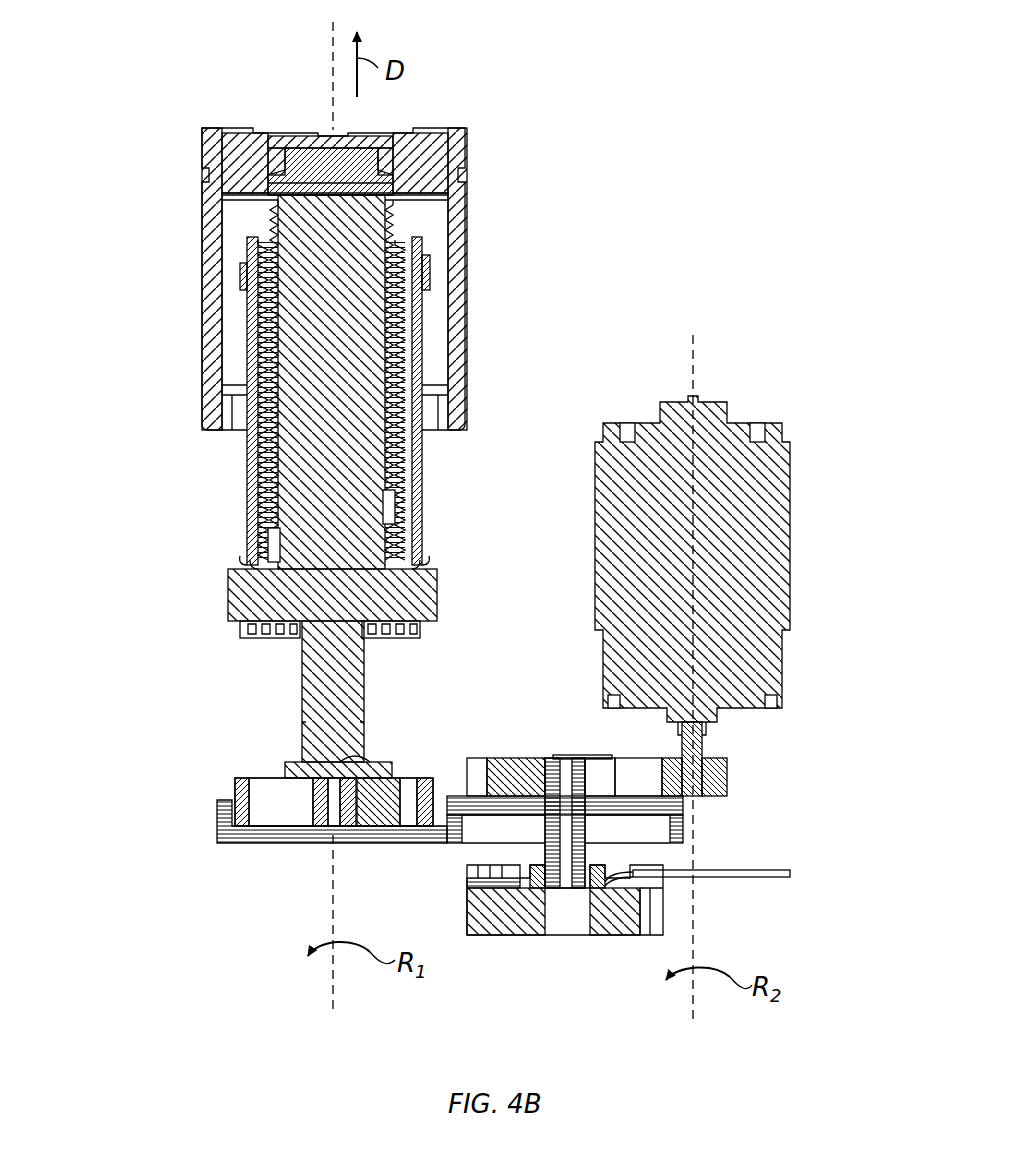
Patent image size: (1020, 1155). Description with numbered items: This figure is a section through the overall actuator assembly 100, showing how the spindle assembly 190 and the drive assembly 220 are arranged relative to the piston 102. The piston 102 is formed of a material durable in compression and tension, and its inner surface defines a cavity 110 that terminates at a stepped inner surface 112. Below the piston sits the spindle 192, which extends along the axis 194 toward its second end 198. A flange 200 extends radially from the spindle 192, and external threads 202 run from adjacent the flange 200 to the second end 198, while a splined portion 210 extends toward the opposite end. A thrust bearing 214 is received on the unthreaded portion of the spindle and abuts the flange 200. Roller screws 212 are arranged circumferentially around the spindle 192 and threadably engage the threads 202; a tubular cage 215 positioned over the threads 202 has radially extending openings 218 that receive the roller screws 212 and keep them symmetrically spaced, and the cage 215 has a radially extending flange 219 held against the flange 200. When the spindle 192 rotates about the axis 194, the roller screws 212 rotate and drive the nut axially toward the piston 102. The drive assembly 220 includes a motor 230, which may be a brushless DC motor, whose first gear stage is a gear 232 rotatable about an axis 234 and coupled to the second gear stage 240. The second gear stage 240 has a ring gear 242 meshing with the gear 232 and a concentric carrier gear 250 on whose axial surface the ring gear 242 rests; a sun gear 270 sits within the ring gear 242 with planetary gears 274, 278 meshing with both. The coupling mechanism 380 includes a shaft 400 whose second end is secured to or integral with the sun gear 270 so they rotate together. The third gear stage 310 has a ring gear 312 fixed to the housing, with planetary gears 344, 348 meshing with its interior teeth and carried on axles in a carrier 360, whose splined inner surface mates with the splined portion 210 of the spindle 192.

The actuator assembly 100 is at (311, 322).
The piston 102 is at (455, 300).
The cavity 110 is at (228, 410).
The stepped inner surface 112 is at (290, 177).
The spindle assembly 190 is at (290, 697).
The spindle 192 is at (255, 368).
The axis 194 is at (332, 993).
The second end 198 is at (402, 213).
The flange 200 is at (240, 588).
The external threads 202 is at (412, 242).
The splined portion 210 is at (298, 755).
The roller screws 212 is at (410, 352).
The thrust bearing 214 is at (242, 630).
The tubular cage 215 is at (425, 490).
The openings 218 is at (402, 358).
The radially extending flange 219 is at (428, 556).
The drive assembly 220 is at (645, 784).
The motor 230 is at (790, 525).
The gear 232 is at (728, 790).
The axis 234 is at (696, 908).
The second gear stage 240 is at (708, 757).
The ring gear 242 is at (470, 758).
The carrier gear 250 is at (692, 826).
The sun gear 270 is at (562, 770).
The planetary gear 274 is at (512, 775).
The planetary gear 278 is at (595, 780).
The third gear stage 310 is at (215, 835).
The ring gear 312 is at (236, 790).
The planetary gear 344 is at (262, 805).
The planetary gear 348 is at (378, 805).
The carrier 360 is at (305, 813).
The coupling mechanism 380 is at (527, 934).
The shaft 400 is at (524, 856).